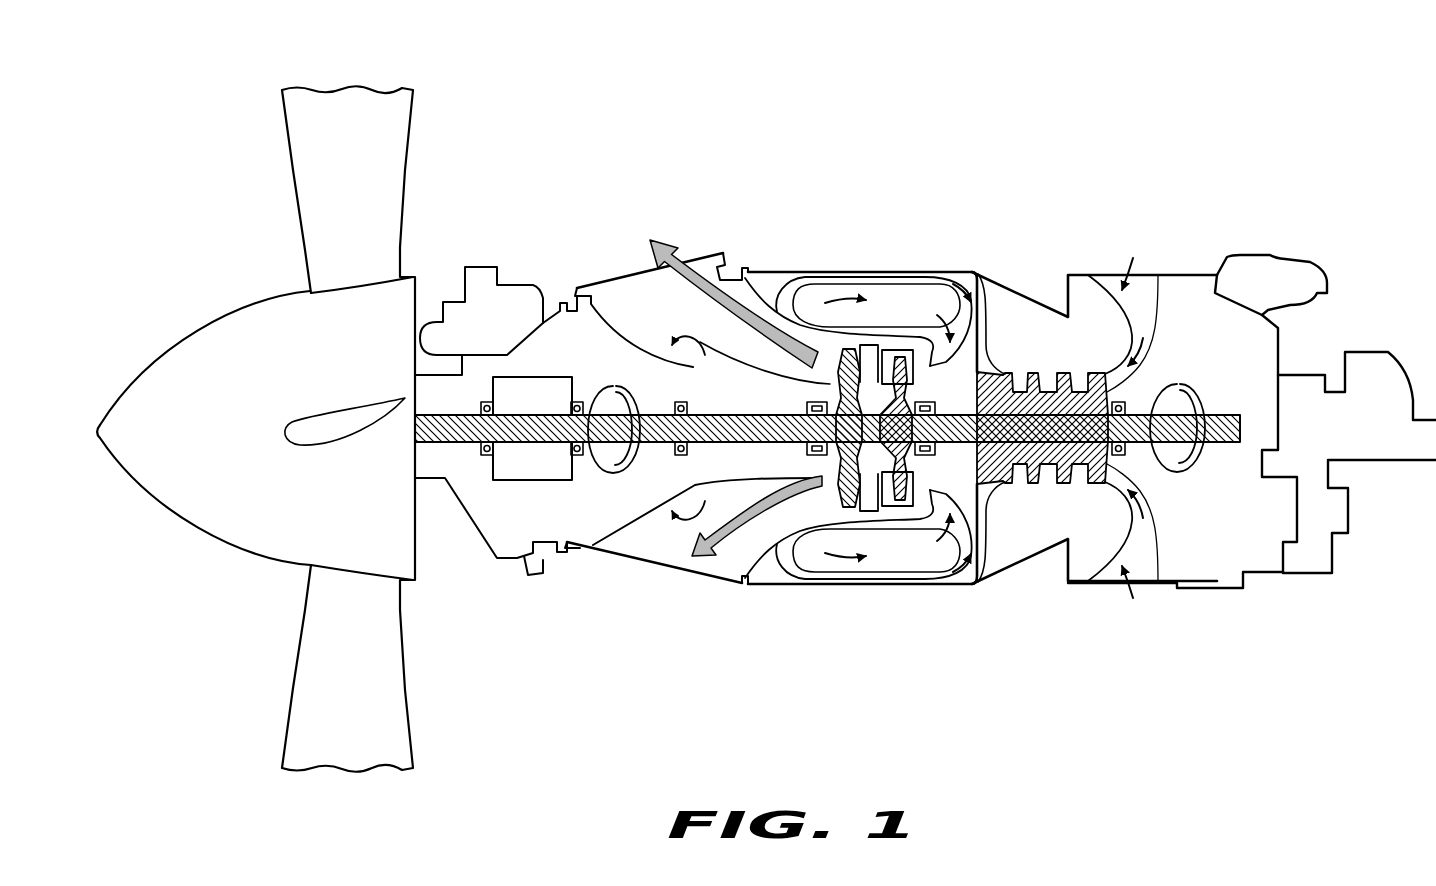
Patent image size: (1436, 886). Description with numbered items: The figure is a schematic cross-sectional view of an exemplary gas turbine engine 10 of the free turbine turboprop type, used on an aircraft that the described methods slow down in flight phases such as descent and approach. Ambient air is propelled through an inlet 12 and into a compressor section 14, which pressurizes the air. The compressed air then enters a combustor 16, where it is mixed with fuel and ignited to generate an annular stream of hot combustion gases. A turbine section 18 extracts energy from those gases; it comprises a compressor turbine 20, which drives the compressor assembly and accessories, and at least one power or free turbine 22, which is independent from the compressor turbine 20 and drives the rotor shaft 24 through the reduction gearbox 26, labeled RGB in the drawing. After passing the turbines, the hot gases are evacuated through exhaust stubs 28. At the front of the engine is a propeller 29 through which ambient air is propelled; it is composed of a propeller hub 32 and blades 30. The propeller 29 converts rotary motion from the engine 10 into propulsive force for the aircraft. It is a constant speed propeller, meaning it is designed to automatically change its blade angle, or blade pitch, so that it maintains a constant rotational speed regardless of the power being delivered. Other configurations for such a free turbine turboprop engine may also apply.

The gas turbine engine 10 is at (778, 146).
The inlet 12 is at (1146, 250).
The compressor section 14 is at (1022, 318).
The combustor 16 is at (883, 305).
The turbine section 18 is at (876, 506).
The compressor turbine 20 is at (917, 457).
The power or free turbine 22 is at (840, 453).
The rotor shaft 24 is at (517, 440).
The reduction gearbox 26 is at (538, 463).
The exhaust stubs 28 is at (608, 254).
The propeller 29 is at (248, 429).
The blades 30 is at (318, 148).
The propeller hub 32 is at (208, 365).